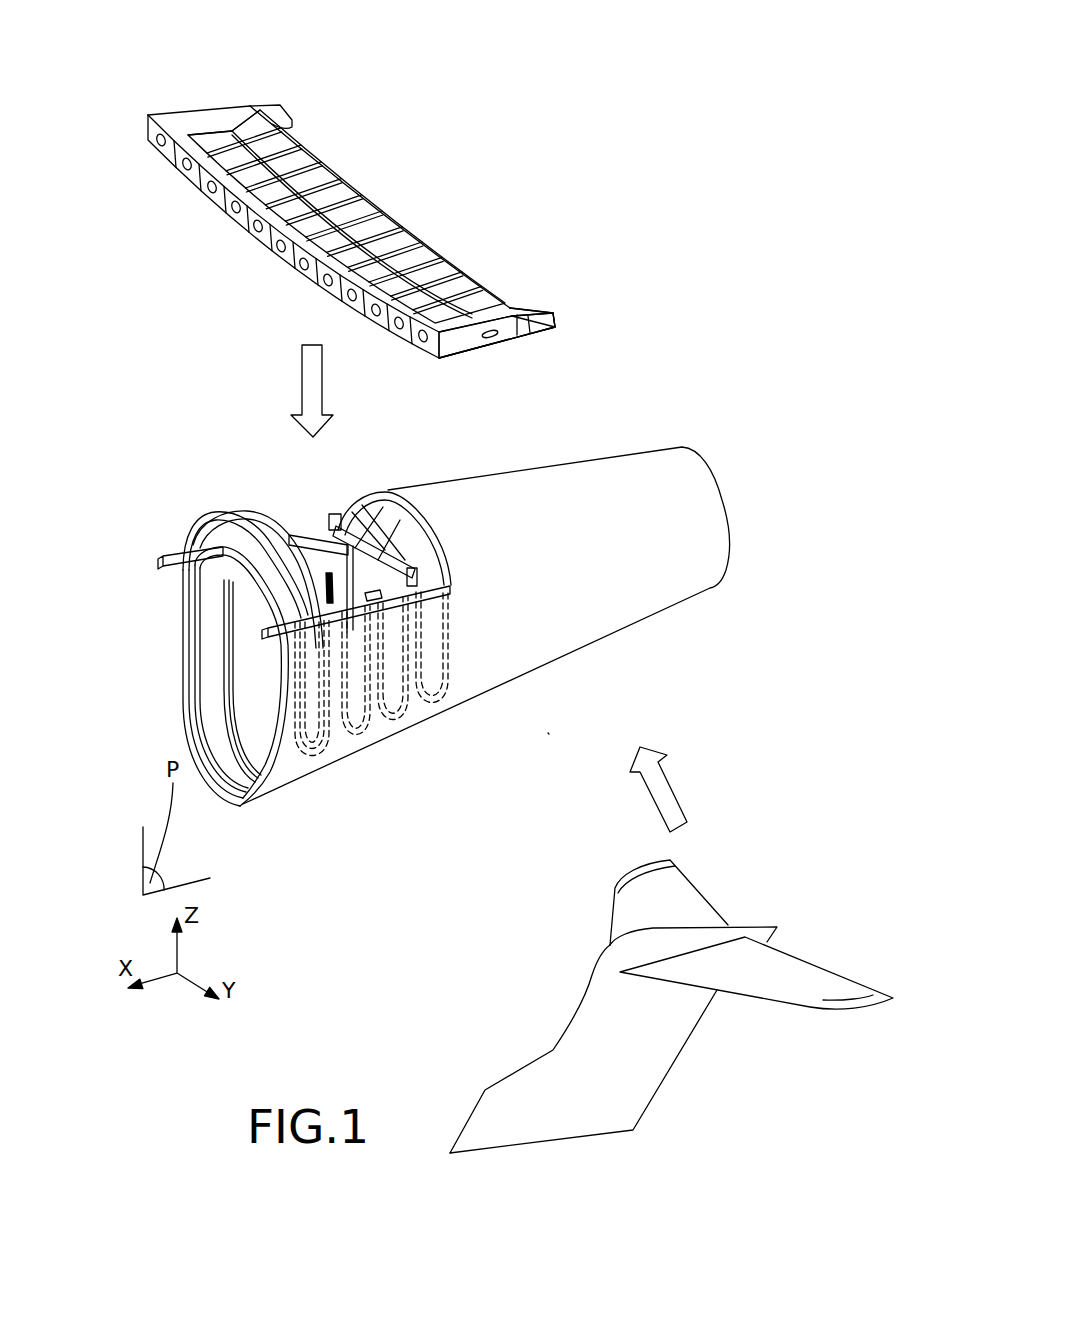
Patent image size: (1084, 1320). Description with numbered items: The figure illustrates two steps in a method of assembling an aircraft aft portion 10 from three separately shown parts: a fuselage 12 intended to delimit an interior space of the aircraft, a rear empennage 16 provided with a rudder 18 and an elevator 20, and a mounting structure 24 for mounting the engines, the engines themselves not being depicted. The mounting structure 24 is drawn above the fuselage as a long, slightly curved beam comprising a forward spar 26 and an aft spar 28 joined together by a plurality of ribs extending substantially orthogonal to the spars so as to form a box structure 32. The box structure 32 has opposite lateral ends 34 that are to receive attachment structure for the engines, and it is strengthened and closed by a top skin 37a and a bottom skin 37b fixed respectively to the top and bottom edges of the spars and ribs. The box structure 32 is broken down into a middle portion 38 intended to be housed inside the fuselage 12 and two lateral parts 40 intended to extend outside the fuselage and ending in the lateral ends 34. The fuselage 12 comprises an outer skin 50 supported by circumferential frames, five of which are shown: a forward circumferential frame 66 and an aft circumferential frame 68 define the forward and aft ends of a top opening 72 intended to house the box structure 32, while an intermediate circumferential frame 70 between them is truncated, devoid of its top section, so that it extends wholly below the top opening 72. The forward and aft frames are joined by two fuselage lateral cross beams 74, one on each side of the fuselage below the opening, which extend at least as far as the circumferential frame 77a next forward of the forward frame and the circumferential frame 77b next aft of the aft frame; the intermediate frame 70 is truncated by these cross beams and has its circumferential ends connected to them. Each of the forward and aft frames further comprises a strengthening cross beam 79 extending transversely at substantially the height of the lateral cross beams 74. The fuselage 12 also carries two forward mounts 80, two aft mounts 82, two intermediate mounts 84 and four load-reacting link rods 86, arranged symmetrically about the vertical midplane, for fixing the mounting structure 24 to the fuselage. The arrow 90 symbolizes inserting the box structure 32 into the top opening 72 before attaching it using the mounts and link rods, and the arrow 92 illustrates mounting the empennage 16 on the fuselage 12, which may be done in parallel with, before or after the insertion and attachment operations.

The aircraft aft portion 10 is at (552, 737).
The fuselage 12 is at (583, 655).
The rear empennage 16 is at (556, 1008).
The rudder 18 is at (657, 1050).
The elevator 20 is at (797, 972).
The mounting structure 24 is at (203, 220).
The box structure 32 is at (355, 225).
The forward spar 26 is at (322, 288).
The aft spar 28 is at (382, 216).
The lateral ends 34 is at (218, 105).
The top skin 37a is at (540, 305).
The bottom skin 37b is at (465, 345).
The middle portion 38 is at (397, 248).
The lateral parts 40 is at (322, 195).
The outer skin 50 is at (648, 465).
The forward circumferential frame 66 is at (284, 790).
The aft circumferential frame 68 is at (397, 742).
The intermediate circumferential frame 70 is at (345, 765).
The top opening 72 is at (303, 527).
The fuselage lateral cross beams 74 is at (317, 540).
The circumferential frame 77a is at (240, 803).
The circumferential frame 77b is at (420, 727).
The strengthening cross beam 79 is at (260, 573).
The forward mounts 80 is at (330, 735).
The aft mounts 82 is at (334, 516).
The intermediate mounts 84 is at (375, 601).
The load-reacting link rods 86 is at (408, 560).
The arrow 90 is at (306, 378).
The arrow 92 is at (668, 800).